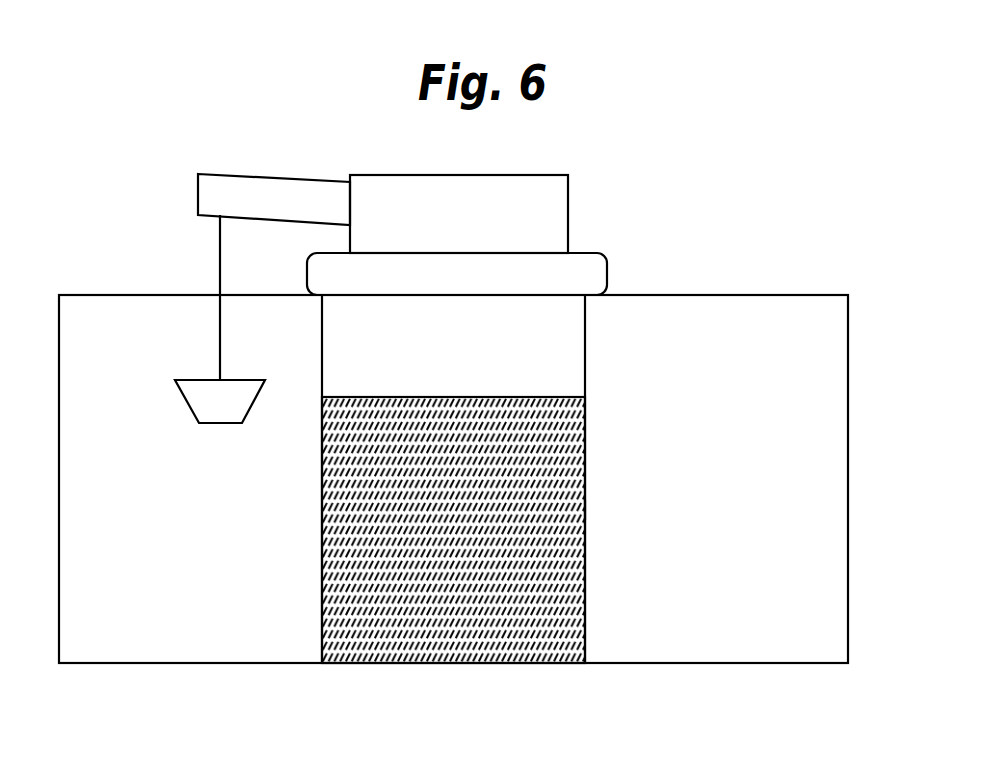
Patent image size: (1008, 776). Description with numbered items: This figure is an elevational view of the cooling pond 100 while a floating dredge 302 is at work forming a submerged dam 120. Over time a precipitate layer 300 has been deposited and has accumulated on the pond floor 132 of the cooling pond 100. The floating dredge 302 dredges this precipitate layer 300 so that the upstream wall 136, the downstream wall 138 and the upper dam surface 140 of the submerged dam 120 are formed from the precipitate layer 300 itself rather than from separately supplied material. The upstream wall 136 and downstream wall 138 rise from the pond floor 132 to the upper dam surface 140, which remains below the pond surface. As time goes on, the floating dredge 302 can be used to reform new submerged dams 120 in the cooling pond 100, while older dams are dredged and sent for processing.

The cooling pond 100 is at (752, 133).
The floating dredge 302 is at (480, 175).
The upper dam surface 140 is at (548, 395).
The pond floor 132 is at (160, 663).
The upstream wall 136 is at (323, 608).
The downstream wall 138 is at (580, 572).
The submerged dam 120 is at (580, 503).
The precipitate layer 300 is at (442, 608).